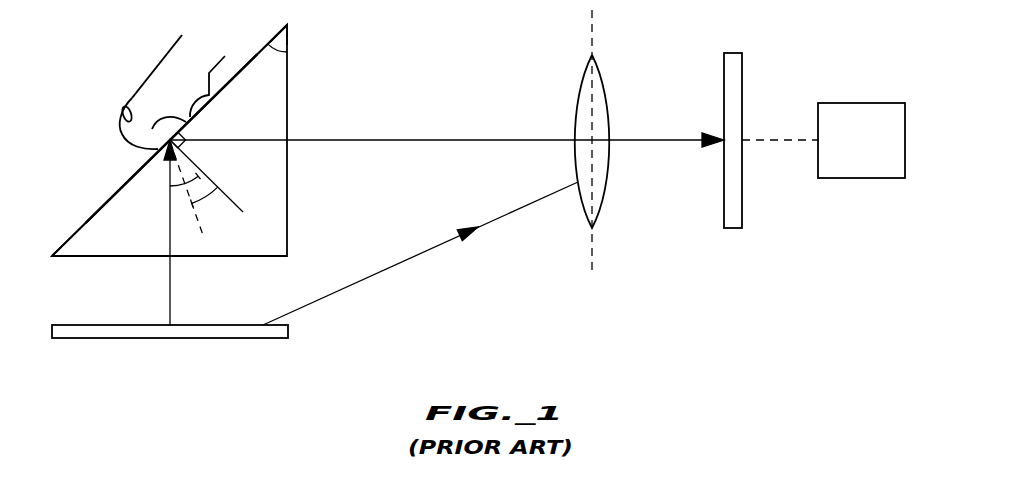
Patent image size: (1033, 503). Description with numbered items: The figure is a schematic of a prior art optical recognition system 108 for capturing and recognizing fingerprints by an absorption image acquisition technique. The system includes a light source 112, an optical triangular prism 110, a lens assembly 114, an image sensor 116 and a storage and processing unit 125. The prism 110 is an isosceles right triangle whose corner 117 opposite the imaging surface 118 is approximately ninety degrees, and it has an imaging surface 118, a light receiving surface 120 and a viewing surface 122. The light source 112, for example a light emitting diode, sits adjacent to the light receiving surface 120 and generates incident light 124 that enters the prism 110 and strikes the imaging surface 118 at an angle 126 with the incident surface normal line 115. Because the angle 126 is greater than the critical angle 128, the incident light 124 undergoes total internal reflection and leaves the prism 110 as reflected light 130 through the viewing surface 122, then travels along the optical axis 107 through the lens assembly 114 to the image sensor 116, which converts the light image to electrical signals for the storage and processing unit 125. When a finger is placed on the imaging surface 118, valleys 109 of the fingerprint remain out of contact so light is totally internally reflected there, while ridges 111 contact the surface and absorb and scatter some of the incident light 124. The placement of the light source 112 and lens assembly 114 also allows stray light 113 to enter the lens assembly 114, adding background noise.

The optical axis 107 is at (593, 240).
The optical recognition system 108 is at (448, 42).
The valleys 109 is at (165, 128).
The optical triangular prism 110 is at (270, 235).
The ridges 111 is at (187, 114).
The light source 112 is at (212, 340).
The stray light 113 is at (427, 255).
The lens assembly 114 is at (602, 76).
The incident surface normal line 115 is at (243, 211).
The image sensor 116 is at (724, 203).
The apex corner 117 is at (273, 43).
The imaging surface 118 is at (70, 236).
The light receiving surface 120 is at (252, 258).
The viewing surface 122 is at (287, 57).
The incident light 124 is at (170, 273).
The storage and processing unit 125 is at (873, 180).
The angle 126 is at (173, 186).
The critical angle 128 is at (222, 193).
The reflected light 130 is at (373, 140).